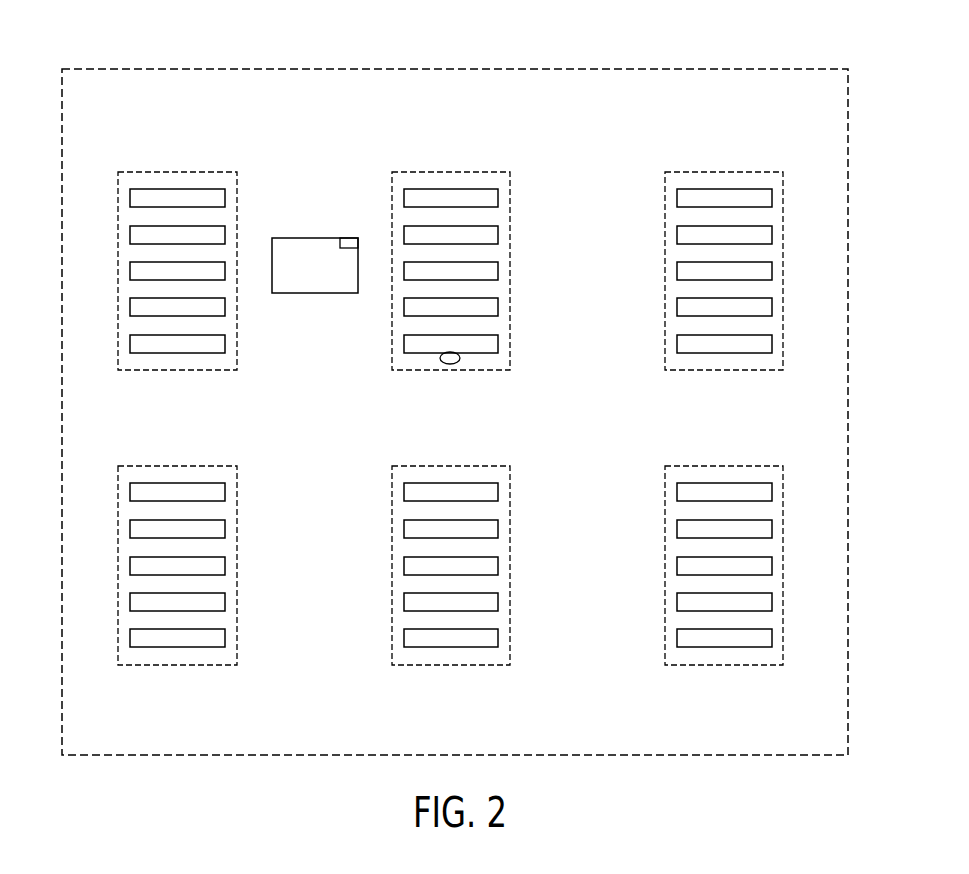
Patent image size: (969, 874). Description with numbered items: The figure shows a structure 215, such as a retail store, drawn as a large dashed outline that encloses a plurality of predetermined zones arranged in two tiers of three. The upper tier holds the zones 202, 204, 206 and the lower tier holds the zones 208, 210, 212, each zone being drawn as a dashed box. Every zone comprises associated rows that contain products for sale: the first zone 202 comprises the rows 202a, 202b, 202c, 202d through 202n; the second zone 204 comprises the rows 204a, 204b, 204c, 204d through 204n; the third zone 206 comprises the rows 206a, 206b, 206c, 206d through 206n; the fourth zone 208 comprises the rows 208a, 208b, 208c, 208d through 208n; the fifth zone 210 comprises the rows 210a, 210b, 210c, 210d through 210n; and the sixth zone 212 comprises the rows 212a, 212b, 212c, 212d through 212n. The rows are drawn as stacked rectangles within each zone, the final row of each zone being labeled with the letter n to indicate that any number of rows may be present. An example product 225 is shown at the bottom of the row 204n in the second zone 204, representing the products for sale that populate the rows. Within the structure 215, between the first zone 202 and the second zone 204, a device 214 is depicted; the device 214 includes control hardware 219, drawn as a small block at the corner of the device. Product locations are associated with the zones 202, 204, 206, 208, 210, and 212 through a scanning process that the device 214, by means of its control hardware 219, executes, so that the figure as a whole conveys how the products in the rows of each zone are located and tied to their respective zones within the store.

The structure 215 is at (461, 68).
The device 214 is at (313, 290).
The control hardware 219 is at (350, 241).
The product 225 is at (450, 362).
The zone 202 is at (178, 168).
The row 202a is at (218, 198).
The row 202b is at (218, 236).
The row 202c is at (218, 271).
The row 202d is at (218, 307).
The row 202n is at (148, 349).
The zone 204 is at (452, 168).
The row 204a is at (490, 198).
The row 204b is at (490, 235).
The row 204c is at (490, 271).
The row 204d is at (490, 307).
The row 204n is at (421, 349).
The zone 206 is at (725, 168).
The row 206a is at (764, 198).
The row 206b is at (764, 235).
The row 206c is at (764, 271).
The row 206d is at (764, 307).
The row 206n is at (695, 349).
The zone 208 is at (180, 462).
The row 208a is at (218, 494).
The row 208b is at (218, 530).
The row 208c is at (218, 566).
The row 208d is at (218, 602).
The row 208n is at (218, 639).
The zone 210 is at (505, 462).
The row 210a is at (490, 494).
The row 210b is at (490, 530).
The row 210c is at (490, 566).
The row 210d is at (490, 602).
The row 210n is at (490, 639).
The zone 212 is at (765, 462).
The row 212a is at (764, 494).
The row 212b is at (764, 530).
The row 212c is at (764, 566).
The row 212d is at (764, 602).
The row 212n is at (764, 639).